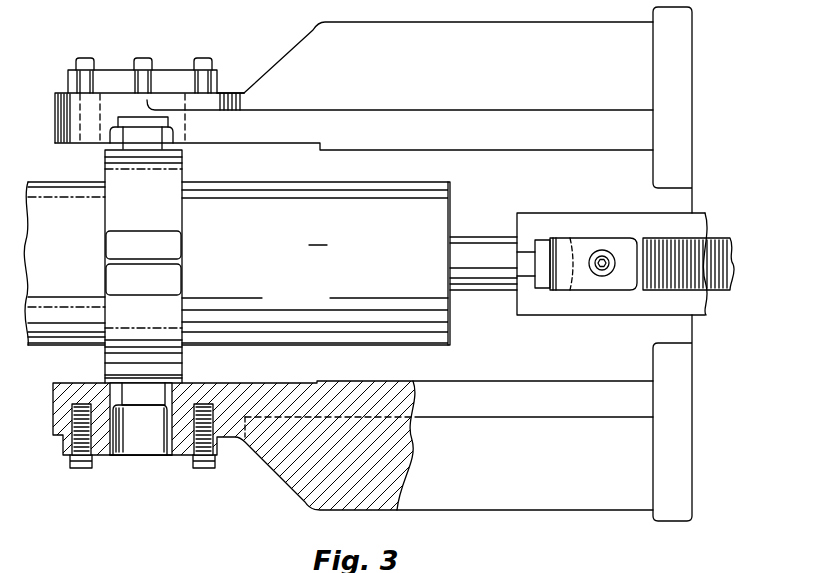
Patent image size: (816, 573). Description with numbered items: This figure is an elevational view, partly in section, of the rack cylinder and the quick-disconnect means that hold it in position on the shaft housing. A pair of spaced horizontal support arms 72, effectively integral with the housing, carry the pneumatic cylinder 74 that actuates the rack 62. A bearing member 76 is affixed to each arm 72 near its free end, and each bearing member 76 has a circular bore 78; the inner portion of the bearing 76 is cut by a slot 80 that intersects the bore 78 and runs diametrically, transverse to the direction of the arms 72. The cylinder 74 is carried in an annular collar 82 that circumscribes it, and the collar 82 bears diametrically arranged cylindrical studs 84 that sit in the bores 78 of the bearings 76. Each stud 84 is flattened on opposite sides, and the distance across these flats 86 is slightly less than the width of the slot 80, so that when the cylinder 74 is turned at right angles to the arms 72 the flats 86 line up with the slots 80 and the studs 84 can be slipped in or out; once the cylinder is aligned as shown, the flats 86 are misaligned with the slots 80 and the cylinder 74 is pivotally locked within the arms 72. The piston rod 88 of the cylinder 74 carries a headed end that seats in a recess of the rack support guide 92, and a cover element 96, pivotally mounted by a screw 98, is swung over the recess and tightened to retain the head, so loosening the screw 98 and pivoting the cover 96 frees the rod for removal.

The rack 62 is at (723, 288).
The support arms 72 is at (542, 28).
The pneumatic cylinder 74 is at (237, 263).
The bearing member 76 is at (103, 457).
The bore 78 is at (113, 437).
The slot 80 is at (170, 131).
The annular collar 82 is at (181, 282).
The cylindrical studs 84 is at (102, 145).
The flats 86 is at (134, 146).
The piston rod 88 is at (473, 235).
The rack support guide 92 is at (613, 307).
The cover element 96 is at (588, 283).
The screw 98 is at (605, 250).